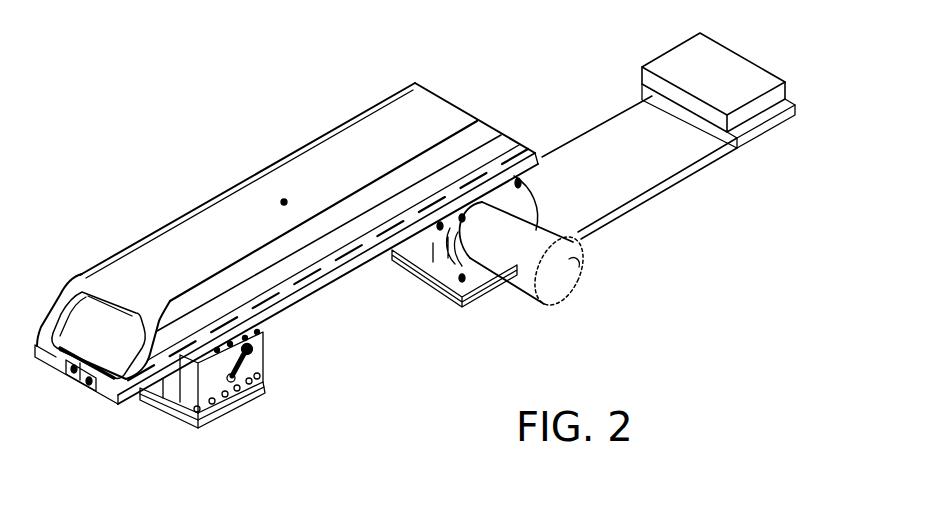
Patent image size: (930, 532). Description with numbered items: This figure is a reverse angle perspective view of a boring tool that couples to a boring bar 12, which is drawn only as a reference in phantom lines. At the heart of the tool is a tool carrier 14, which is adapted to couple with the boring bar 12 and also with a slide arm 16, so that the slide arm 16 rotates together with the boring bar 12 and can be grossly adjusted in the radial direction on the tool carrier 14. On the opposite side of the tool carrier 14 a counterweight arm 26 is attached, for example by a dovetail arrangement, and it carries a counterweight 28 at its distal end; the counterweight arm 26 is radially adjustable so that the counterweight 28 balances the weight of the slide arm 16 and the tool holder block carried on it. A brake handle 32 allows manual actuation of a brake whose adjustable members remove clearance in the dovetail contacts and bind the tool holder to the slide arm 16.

The boring bar 12 is at (586, 301).
The tool carrier 14 is at (531, 186).
The slide arm 16 is at (166, 228).
The counterweight arm 26 is at (681, 181).
The counterweight 28 is at (677, 58).
The brake handle 32 is at (250, 365).